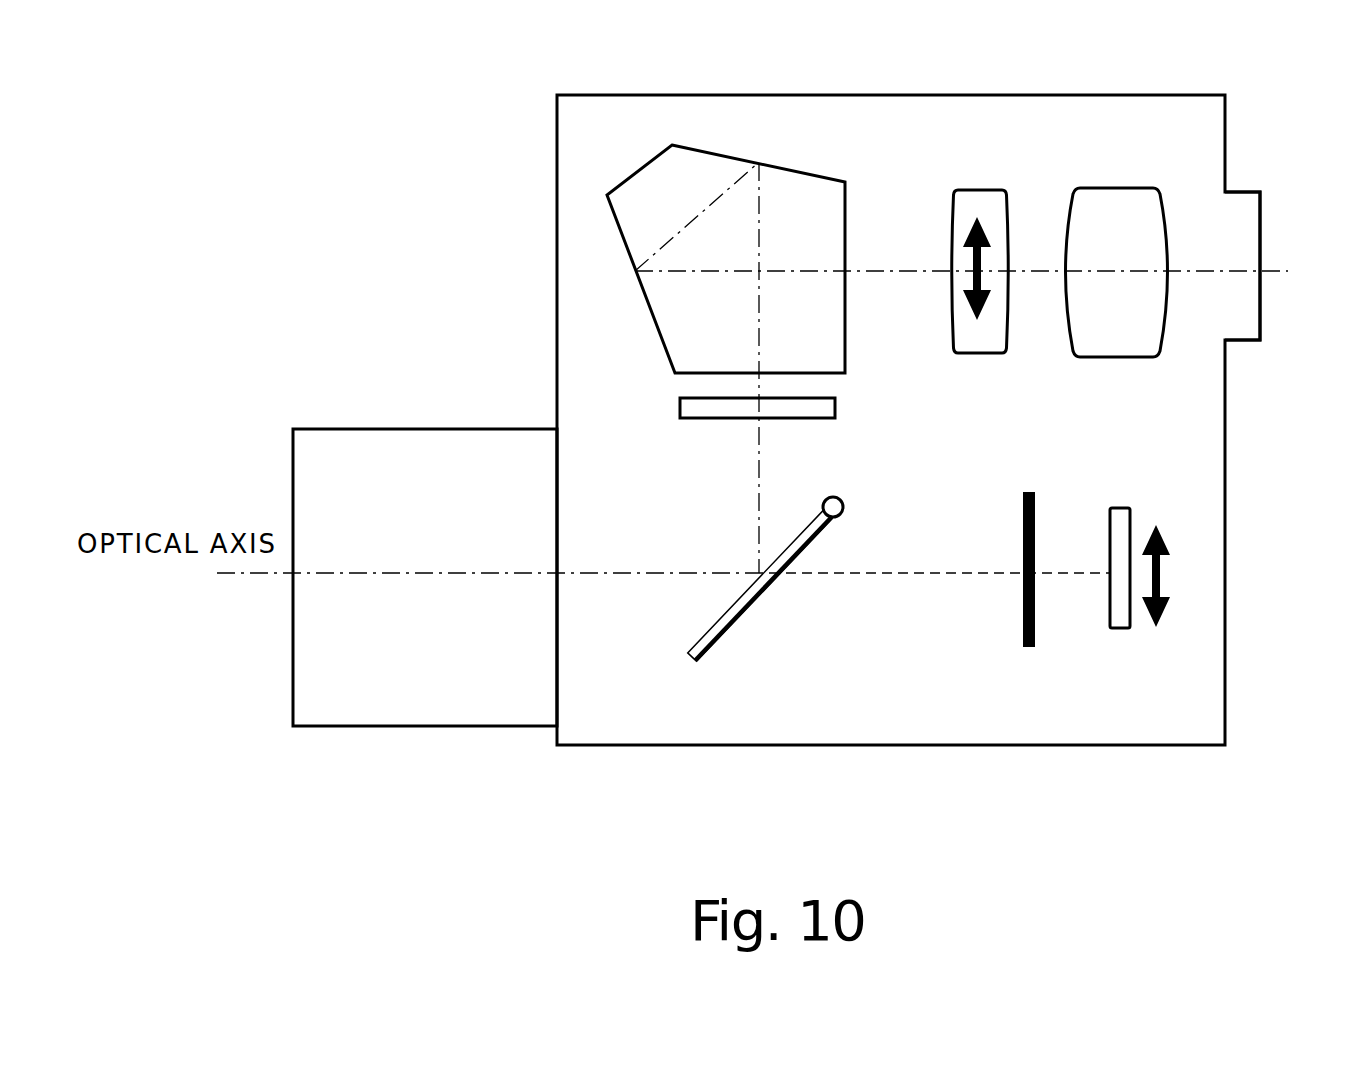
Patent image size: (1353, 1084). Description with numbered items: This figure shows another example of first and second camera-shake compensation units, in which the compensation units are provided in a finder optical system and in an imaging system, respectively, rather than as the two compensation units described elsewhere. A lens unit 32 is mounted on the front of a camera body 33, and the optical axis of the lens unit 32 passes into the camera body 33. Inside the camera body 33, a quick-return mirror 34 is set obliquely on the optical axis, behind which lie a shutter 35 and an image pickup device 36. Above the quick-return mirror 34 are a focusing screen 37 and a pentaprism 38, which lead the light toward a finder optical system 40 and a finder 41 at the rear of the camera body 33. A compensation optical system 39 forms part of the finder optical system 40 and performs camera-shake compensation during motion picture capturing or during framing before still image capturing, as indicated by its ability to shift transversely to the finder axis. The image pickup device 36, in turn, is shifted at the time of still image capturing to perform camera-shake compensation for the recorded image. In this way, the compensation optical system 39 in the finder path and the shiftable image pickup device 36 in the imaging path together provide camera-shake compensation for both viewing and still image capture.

The lens unit 32 is at (405, 428).
The camera body 33 is at (813, 748).
The quick-return mirror 34 is at (755, 602).
The shutter 35 is at (1030, 647).
The image pickup device 36 is at (1120, 628).
The focusing screen 37 is at (836, 407).
The pentaprism 38 is at (812, 172).
The compensation optical system 39 is at (963, 188).
The finder optical system 40 is at (1103, 188).
The finder 41 is at (1260, 232).